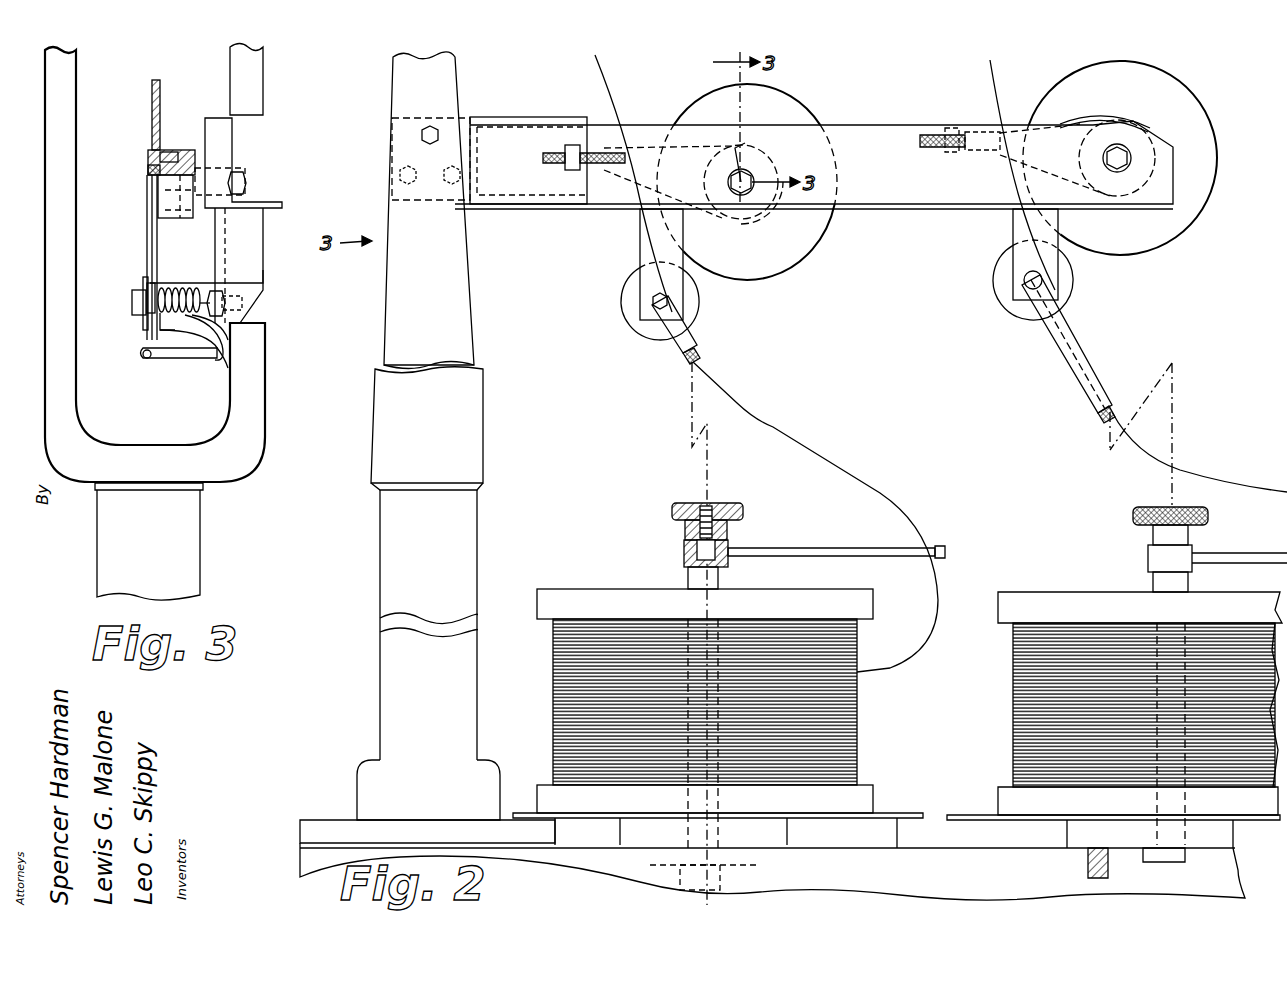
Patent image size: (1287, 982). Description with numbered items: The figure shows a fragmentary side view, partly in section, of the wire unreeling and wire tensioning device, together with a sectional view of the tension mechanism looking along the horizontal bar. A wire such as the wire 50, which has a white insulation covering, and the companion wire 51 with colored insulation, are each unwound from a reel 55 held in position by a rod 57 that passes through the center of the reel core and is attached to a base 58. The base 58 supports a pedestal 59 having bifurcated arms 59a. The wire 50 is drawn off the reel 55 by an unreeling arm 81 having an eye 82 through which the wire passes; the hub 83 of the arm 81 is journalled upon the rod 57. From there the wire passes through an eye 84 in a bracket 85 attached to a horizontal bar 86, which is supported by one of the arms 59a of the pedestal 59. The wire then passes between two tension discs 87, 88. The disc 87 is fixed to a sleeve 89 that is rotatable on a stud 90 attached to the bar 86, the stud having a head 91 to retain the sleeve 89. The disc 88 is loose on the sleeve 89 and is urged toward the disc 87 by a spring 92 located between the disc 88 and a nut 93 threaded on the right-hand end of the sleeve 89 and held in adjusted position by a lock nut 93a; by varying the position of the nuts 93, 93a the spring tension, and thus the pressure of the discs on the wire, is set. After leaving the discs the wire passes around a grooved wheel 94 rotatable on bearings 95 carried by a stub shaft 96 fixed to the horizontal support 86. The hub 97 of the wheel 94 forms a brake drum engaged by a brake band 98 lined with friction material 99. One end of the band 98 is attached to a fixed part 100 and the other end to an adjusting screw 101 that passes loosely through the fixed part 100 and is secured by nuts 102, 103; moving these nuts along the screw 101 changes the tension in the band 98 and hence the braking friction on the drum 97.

In FIG. 2, the wire 50 is at (893, 672).
In FIG. 2, the wire 51 is at (1199, 452).
In FIG. 2, the reel 55 is at (862, 770).
In FIG. 2, the rod 57 is at (688, 580).
In FIG. 2, the base 58 is at (896, 858).
In FIG. 3, the pedestal 59 is at (190, 557).
In FIG. 2, the pedestal 59 is at (380, 549).
In FIG. 3, the bifurcated arm 59a is at (263, 70).
In FIG. 2, the bifurcated arm 59a is at (455, 66).
In FIG. 2, the unreeling arm 81 is at (800, 548).
In FIG. 2, the eye 82 is at (945, 552).
In FIG. 2, the hub 83 is at (684, 557).
In FIG. 3, the eye 84 is at (143, 353).
In FIG. 2, the eye 84 is at (692, 360).
In FIG. 3, the bracket 85 is at (148, 360).
In FIG. 2, the bracket 85 is at (700, 353).
In FIG. 3, the horizontal bar 86 is at (207, 137).
In FIG. 2, the horizontal bar 86 is at (890, 125).
In FIG. 3, the tension disc 87 is at (143, 290).
In FIG. 3, the tension disc 88 is at (160, 283).
In FIG. 2, the tension disc 88 is at (622, 310).
In FIG. 3, the sleeve 89 is at (197, 295).
In FIG. 3, the stud 90 is at (240, 300).
In FIG. 2, the stud 90 is at (668, 301).
In FIG. 3, the head 91 is at (135, 315).
In FIG. 3, the spring 92 is at (172, 330).
In FIG. 3, the nut 93 is at (228, 366).
In FIG. 3, the lock nut 93a is at (226, 340).
In FIG. 3, the grooved wheel 94 is at (142, 103).
In FIG. 2, the grooved wheel 94 is at (810, 112).
In FIG. 3, the bearings 95 is at (148, 170).
In FIG. 3, the stub shaft 96 is at (246, 183).
In FIG. 2, the stub shaft 96 is at (738, 195).
In FIG. 3, the hub 97 is at (178, 160).
In FIG. 2, the hub 97 is at (703, 172).
In FIG. 3, the brake band 98 is at (170, 152).
In FIG. 2, the brake band 98 is at (754, 138).
In FIG. 2, the friction material 99 is at (775, 158).
In FIG. 2, the fixed part 100 is at (582, 168).
In FIG. 2, the adjusting screw 101 is at (605, 145).
In FIG. 2, the nut 102 is at (572, 145).
In FIG. 2, the nut 103 is at (543, 155).